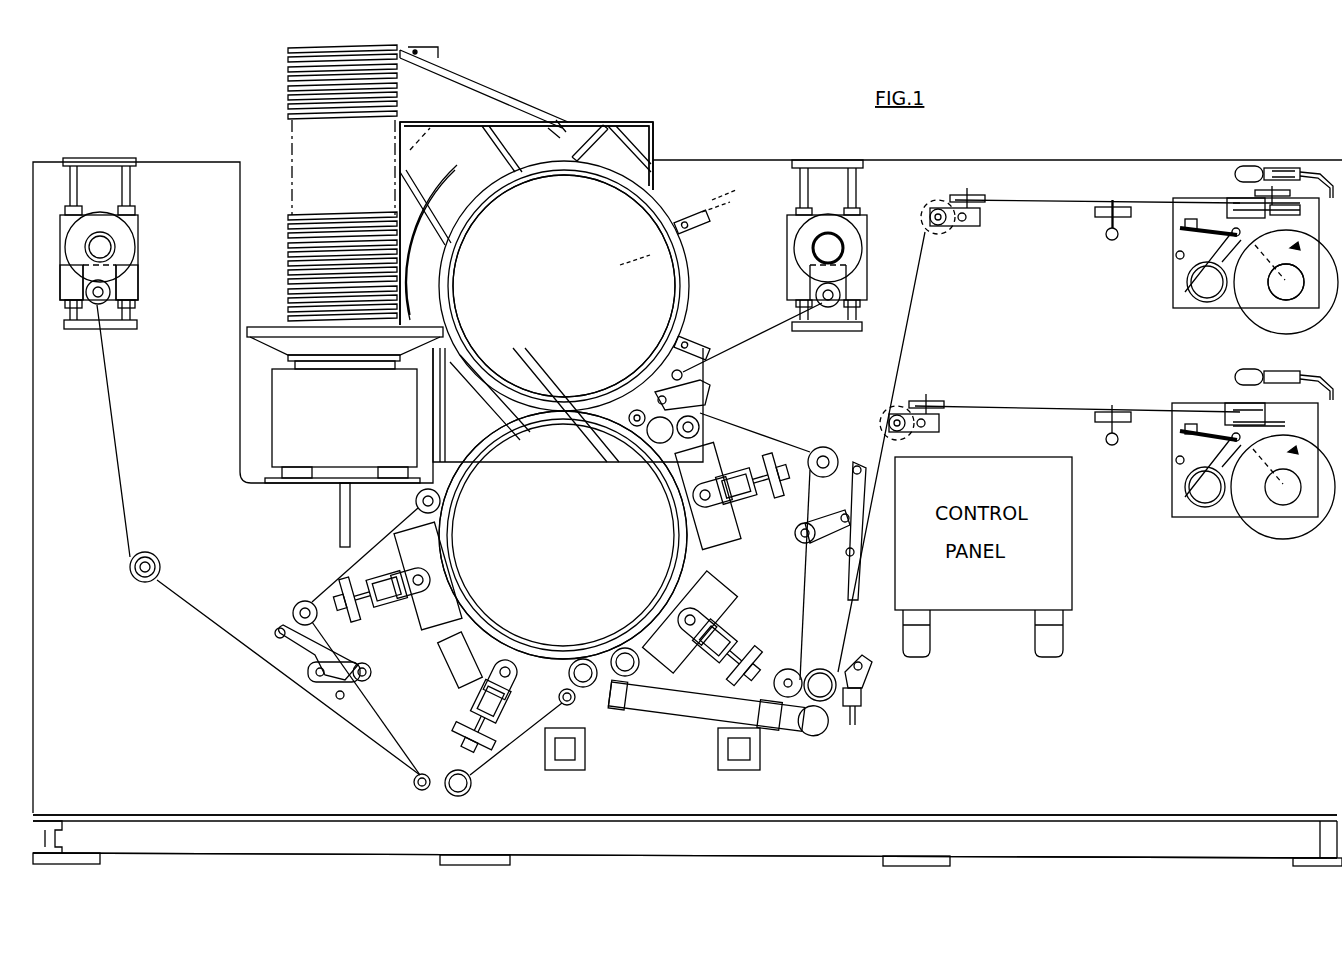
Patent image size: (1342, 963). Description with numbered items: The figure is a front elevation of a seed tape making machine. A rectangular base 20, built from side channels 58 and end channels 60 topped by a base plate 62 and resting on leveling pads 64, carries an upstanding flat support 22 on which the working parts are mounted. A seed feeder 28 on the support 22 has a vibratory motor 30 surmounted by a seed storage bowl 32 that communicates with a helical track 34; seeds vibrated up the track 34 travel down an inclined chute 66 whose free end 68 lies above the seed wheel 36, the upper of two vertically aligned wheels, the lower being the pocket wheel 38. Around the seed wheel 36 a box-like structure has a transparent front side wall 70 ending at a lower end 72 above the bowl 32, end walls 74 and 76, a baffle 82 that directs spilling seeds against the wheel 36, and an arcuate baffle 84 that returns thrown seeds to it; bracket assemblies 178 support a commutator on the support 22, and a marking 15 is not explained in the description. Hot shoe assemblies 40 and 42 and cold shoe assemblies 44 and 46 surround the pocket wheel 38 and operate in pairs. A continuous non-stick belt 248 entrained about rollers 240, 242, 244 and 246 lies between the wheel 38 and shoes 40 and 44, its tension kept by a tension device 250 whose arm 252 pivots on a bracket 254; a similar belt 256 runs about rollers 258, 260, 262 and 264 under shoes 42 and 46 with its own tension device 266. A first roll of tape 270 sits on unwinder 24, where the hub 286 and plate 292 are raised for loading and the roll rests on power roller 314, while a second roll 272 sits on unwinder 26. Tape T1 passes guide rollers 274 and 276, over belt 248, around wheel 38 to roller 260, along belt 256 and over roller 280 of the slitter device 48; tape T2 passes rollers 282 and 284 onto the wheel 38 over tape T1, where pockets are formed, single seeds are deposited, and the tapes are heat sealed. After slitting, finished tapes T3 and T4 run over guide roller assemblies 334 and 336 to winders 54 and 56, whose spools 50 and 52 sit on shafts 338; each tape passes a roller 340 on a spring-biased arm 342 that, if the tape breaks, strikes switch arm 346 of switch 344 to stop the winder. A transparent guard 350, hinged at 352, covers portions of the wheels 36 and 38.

The base 20 is at (1105, 840).
The support 22 is at (687, 467).
The tape supporting and unwinding device 24 is at (156, 245).
The tape supporting and unwinding device 26 is at (876, 230).
The seed storage and feeding facility 28 is at (250, 358).
The vibratory motor 30 is at (342, 426).
The seed storage bowl 32 is at (255, 335).
The helical track 34 is at (290, 105).
The seed wheel 36 is at (564, 286).
The pocket wheel 38 is at (563, 535).
The heating shoe assembly 40 is at (464, 692).
The heating shoe assembly 42 is at (768, 510).
The cooling shoe assembly 44 is at (396, 615).
The cooling shoe assembly 46 is at (731, 618).
The slitter device 48 is at (884, 700).
The spool 50 is at (1297, 325).
The spool 52 is at (1297, 540).
The winding mechanism 54 is at (1164, 290).
The winding mechanism 56 is at (1164, 527).
The side channel 58 is at (818, 850).
The end channel 60 is at (50, 835).
The base plate 62 is at (1046, 813).
The leveling pad 64 is at (85, 868).
The inclined chute 66 is at (485, 85).
The free end 68 is at (548, 116).
The side wall 70 is at (640, 140).
The lower end 72 is at (440, 318).
The end wall 74 is at (658, 150).
The end wall 76 is at (432, 125).
The baffle 82 is at (590, 135).
The arcuate baffle 84 is at (440, 170).
The section line 15 is at (725, 218).
The bracket assembly 178 is at (698, 232).
The roller 240 is at (415, 500).
The roller 242 is at (292, 610).
The roller 244 is at (472, 790).
The roller 246 is at (588, 690).
The continuous belt 248 is at (402, 722).
The belt tension device 250 is at (292, 690).
The arm 252 is at (366, 682).
The bracket 254 is at (275, 635).
The belt 256 is at (800, 585).
The roller 258 is at (712, 408).
The roller 260 is at (632, 665).
The roller 262 is at (785, 668).
The roller 264 is at (828, 448).
The tension device 266 is at (844, 566).
The roll of tape 270 is at (125, 231).
The roll of tape 272 is at (840, 258).
The guide roller 274 is at (130, 570).
The guide roller 276 is at (412, 786).
The roller 280 is at (830, 702).
The roller 282 is at (690, 377).
The roller 284 is at (645, 440).
The hub 286 is at (110, 250).
The plate 292 is at (130, 292).
The power roller 314 is at (105, 300).
The guide roller assembly 334 is at (966, 243).
The guide roller assembly 336 is at (957, 437).
The rotatable shaft 338 is at (1282, 290).
The roller 340 is at (1262, 222).
The arm 342 is at (1262, 195).
The switch 344 is at (1268, 165).
The switch arm 346 is at (1330, 175).
The transparent guard 350 is at (552, 450).
The hinge 352 is at (505, 368).
The tape T1 is at (255, 680).
The tape T2 is at (770, 332).
The finished tape T3 is at (905, 355).
The finished tape T4 is at (1015, 405).